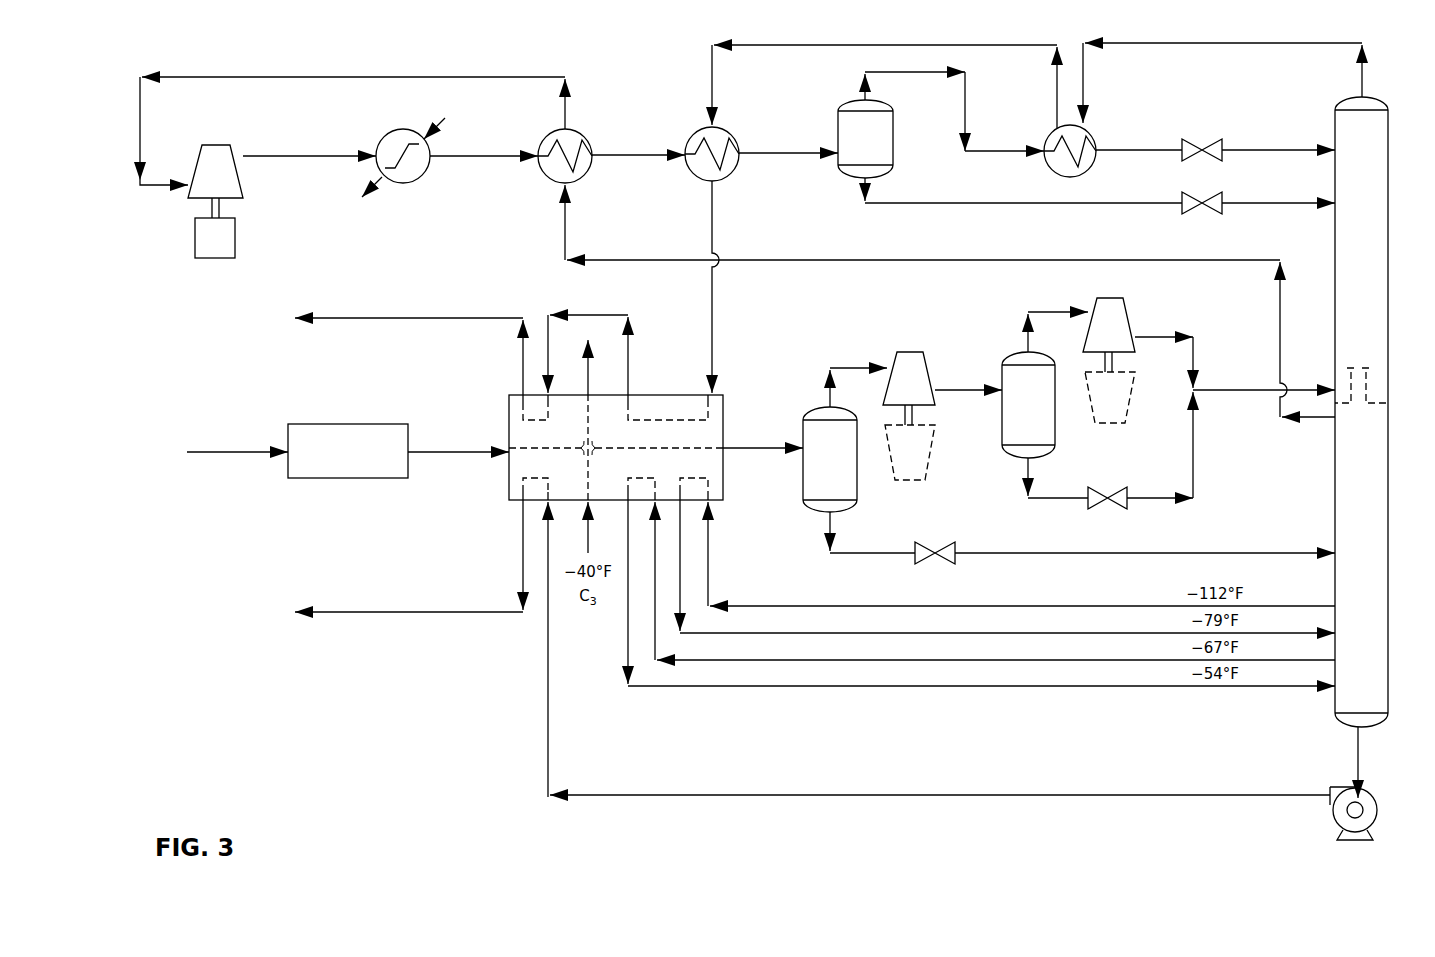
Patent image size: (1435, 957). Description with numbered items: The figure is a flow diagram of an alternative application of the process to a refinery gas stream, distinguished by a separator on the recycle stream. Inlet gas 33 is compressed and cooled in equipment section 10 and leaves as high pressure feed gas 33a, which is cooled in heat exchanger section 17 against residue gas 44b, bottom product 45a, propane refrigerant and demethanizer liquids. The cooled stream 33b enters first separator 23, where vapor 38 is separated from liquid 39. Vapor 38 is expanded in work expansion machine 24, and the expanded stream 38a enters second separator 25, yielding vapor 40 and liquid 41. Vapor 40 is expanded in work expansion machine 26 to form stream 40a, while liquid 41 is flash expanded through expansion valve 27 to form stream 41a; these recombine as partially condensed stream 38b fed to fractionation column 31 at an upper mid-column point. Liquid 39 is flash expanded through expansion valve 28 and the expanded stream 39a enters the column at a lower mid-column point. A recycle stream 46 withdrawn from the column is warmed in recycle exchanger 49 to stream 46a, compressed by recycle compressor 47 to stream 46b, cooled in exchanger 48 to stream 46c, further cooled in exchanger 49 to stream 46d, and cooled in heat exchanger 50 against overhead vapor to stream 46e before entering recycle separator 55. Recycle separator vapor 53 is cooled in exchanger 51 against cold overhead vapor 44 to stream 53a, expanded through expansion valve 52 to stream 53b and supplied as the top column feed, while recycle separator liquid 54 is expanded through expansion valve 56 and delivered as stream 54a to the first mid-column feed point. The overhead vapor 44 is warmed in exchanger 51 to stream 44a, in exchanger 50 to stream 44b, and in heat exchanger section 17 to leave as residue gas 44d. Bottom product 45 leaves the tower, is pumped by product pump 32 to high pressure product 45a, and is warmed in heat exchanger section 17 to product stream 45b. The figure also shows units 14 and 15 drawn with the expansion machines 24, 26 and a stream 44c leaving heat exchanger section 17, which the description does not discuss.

The equipment section 10 is at (348, 478).
The compressor driven by expansion machine 24 14 is at (928, 460).
The compressor driven by expansion machine 26 15 is at (1130, 400).
The heat exchanger section 17 is at (723, 490).
The first separator 23 is at (857, 500).
The work expansion machine 24 is at (925, 352).
The second separator 25 is at (1055, 440).
The work expansion machine 26 is at (1125, 298).
The expansion valve 27 is at (1085, 487).
The expansion valve 28 is at (912, 542).
The fractionation column 31 is at (1335, 450).
The product pump 32 is at (1333, 832).
The inlet gas stream 33 is at (232, 452).
The high pressure feed gas stream 33a is at (452, 452).
The cooled feed stream 33b is at (758, 448).
The first separator vapor stream 38 is at (850, 368).
The expanded stream 38a is at (963, 390).
The partially condensed stream 38b is at (1232, 390).
The first separator liquid stream 39 is at (855, 553).
The expanded liquid stream 39a is at (985, 553).
The second separator vapor stream 40 is at (1048, 312).
The expanded vapor stream 40a is at (1193, 352).
The second separator liquid stream 41 is at (1055, 498).
The expanded liquid stream 41a is at (1160, 498).
The demethanizer overhead vapor stream 44 is at (1255, 43).
The cool demethanizer overhead vapor stream 44a is at (1012, 45).
The warmed residue gas stream 44b is at (712, 313).
The warmed residue stream 44c is at (628, 368).
The residue gas stream 44d is at (457, 318).
The bottom product stream 45 is at (1358, 746).
The high pressure product stream 45a is at (1222, 795).
The warmed product stream 45b is at (455, 612).
The recycle stream 46 is at (806, 260).
The warmed recycle gas stream 46a is at (350, 77).
The compressed recycle gas stream 46b is at (298, 157).
The cooled high pressure recycle gas stream 46c is at (487, 157).
The further cooled recycle gas stream 46d is at (623, 156).
The cooled recycle gas stream 46e is at (780, 154).
The recycle compressor 47 is at (200, 150).
The exchanger 48 is at (428, 172).
The recycle exchanger 49 is at (540, 170).
The heat exchanger 50 is at (688, 170).
The exchanger 51 is at (1048, 166).
The expansion valve 52 is at (1180, 160).
The recycle separator vapor stream 53 is at (910, 72).
The cooled recycle vapor stream 53a is at (1118, 151).
The expanded recycle stream 53b is at (1265, 151).
The recycle separator liquid stream 54 is at (913, 203).
The expanded recycle liquid stream 54a is at (1265, 204).
The recycle separator 55 is at (893, 138).
The expansion valve 56 is at (1180, 213).